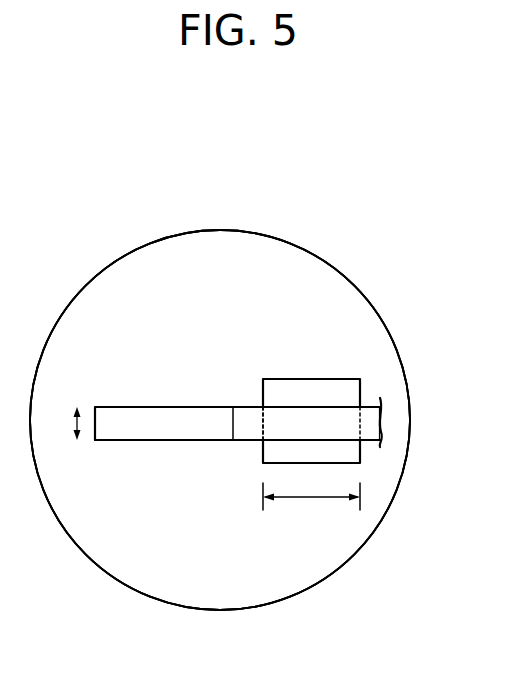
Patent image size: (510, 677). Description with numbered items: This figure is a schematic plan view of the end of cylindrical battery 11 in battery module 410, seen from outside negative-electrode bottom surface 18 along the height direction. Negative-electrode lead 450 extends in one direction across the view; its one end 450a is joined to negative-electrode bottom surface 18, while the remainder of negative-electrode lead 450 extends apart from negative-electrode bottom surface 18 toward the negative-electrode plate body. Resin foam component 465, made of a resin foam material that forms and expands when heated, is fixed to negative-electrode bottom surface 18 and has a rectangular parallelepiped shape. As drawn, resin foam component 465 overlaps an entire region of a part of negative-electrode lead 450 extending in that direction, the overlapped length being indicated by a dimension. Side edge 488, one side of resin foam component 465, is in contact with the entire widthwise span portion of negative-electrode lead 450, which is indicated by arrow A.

The battery module 410 is at (210, 208).
The cylindrical battery 11 is at (298, 232).
The negative-electrode bottom surface 18 is at (138, 555).
The negative-electrode lead 450 is at (196, 400).
The one end of negative-electrode lead 450a is at (157, 444).
The resin foam component 465 is at (331, 388).
The side edge 488 is at (263, 420).
The widthwise span portion of negative-electrode lead A is at (73, 423).